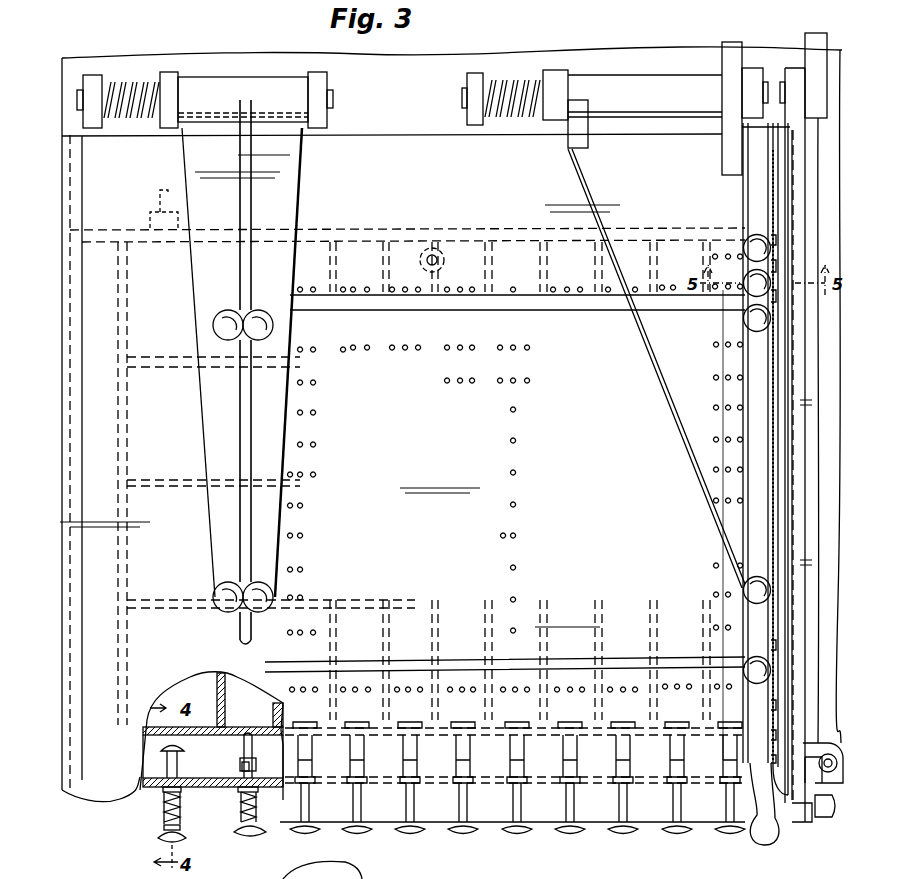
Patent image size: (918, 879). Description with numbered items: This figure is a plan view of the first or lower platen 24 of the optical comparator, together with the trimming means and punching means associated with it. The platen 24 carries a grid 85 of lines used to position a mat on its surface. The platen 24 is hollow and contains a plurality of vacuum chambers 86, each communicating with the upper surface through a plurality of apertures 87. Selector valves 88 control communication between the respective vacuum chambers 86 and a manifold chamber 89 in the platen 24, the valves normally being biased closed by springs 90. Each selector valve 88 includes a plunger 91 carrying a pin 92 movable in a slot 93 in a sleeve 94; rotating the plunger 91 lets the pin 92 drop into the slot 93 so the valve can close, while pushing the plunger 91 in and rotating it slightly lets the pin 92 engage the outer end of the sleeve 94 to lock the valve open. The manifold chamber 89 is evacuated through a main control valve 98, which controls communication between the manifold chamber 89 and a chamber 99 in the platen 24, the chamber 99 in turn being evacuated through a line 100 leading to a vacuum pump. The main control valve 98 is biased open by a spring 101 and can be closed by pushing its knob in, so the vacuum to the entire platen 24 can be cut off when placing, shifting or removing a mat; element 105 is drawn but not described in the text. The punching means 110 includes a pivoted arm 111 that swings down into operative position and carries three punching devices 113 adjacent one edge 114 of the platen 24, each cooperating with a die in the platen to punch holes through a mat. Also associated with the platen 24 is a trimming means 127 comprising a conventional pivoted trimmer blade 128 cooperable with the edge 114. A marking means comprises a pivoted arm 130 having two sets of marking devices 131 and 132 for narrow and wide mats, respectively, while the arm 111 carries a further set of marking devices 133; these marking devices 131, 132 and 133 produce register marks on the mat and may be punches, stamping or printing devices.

The lower platen 24 is at (515, 507).
The grid 85 is at (544, 320).
The vacuum chambers 86 is at (232, 697).
The apertures 87 is at (460, 345).
The selector valves 88 is at (258, 838).
The manifold chamber 89 is at (142, 774).
The springs 90 is at (241, 817).
The plunger 91 is at (244, 747).
The pin 92 is at (256, 772).
The slot 93 is at (242, 766).
The sleeve 94 is at (240, 791).
The main control valve 98 is at (160, 842).
The chamber 99 is at (145, 728).
The line 100 is at (150, 205).
The spring 101 is at (164, 812).
The washer 105 is at (165, 829).
The punching means 110 is at (735, 521).
The pivoted arm 111 is at (742, 648).
The punching devices 113 is at (770, 256).
The edge 114 is at (790, 727).
The trimming means 127 is at (779, 416).
The trimmer blade 128 is at (787, 443).
The pivoted arm 130 is at (190, 291).
The marking devices 131 is at (272, 327).
The marking devices 132 is at (220, 330).
The marking devices 133 is at (745, 298).